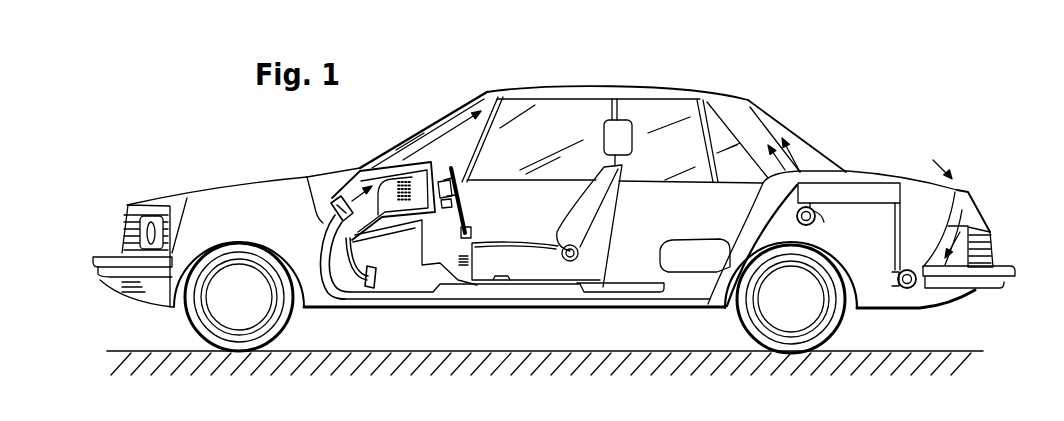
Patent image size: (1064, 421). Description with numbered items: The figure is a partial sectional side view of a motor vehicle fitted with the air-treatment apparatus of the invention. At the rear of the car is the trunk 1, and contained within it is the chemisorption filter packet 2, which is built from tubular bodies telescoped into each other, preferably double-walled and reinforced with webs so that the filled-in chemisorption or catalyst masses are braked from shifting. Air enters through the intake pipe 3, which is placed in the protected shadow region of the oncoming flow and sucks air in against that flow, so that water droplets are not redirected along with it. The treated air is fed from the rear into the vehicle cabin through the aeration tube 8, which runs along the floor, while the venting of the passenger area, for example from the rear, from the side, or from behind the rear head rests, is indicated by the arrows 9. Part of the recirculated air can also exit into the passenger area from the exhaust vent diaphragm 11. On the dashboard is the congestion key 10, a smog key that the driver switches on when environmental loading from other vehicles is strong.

The trunk 1 is at (925, 225).
The chemisorption filter packet 2 is at (860, 192).
The intake pipe 3 is at (900, 289).
The aeration tube 8 is at (577, 303).
The arrows 9 is at (792, 160).
The congestion key 10 is at (468, 157).
The exhaust vent diaphragm 11 is at (815, 221).